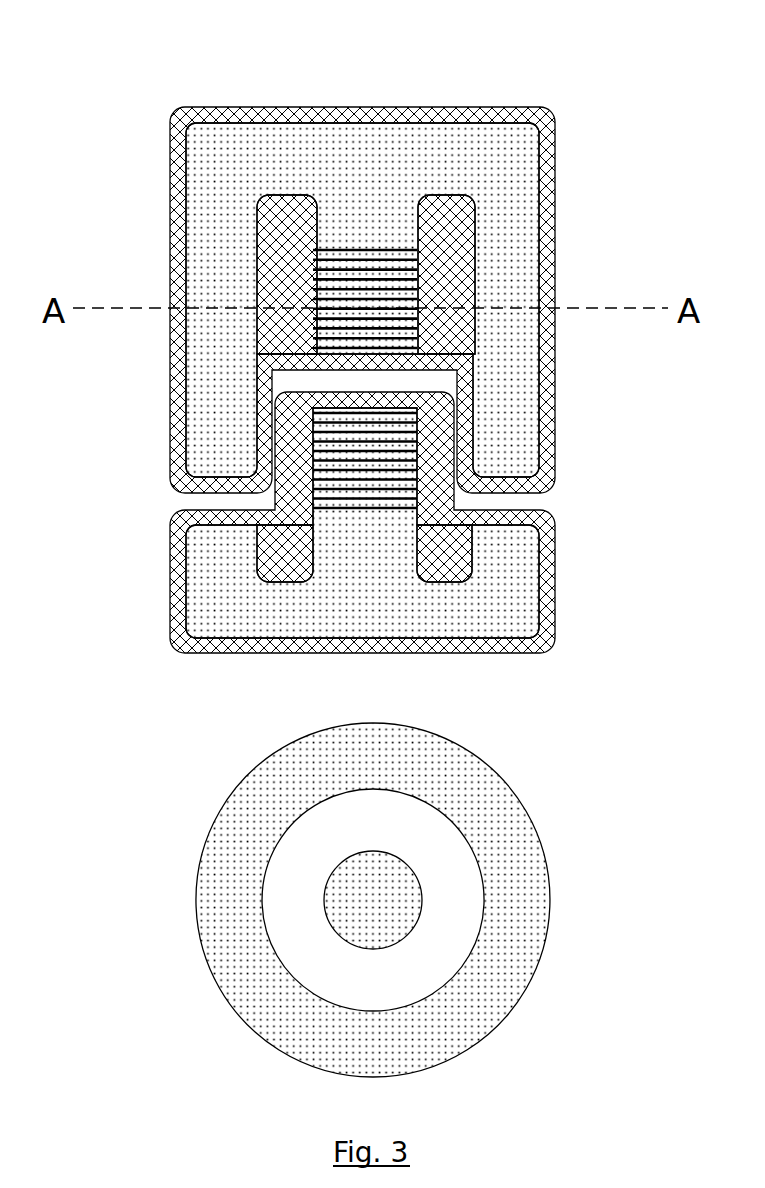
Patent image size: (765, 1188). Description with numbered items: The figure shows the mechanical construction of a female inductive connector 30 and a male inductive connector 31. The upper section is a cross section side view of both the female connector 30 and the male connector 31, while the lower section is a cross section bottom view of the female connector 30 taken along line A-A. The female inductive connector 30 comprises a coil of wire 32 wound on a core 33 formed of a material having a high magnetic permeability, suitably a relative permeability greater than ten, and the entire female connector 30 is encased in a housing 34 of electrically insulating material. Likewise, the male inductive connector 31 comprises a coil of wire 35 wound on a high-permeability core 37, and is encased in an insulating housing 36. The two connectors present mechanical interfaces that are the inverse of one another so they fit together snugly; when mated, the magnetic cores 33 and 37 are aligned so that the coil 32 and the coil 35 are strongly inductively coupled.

The female inductive connector 30 is at (396, 251).
The male inductive connector 31 is at (409, 493).
The coil of wire 32 is at (421, 290).
The core 33 is at (513, 220).
The housing 34 is at (541, 111).
The coil of wire 35 is at (418, 450).
The housing 36 is at (553, 527).
The core 37 is at (513, 592).